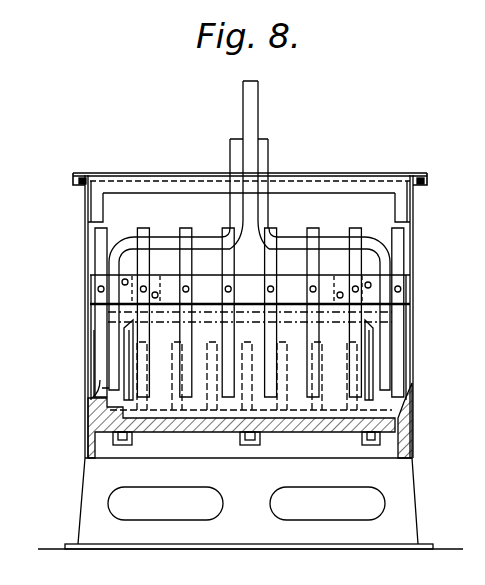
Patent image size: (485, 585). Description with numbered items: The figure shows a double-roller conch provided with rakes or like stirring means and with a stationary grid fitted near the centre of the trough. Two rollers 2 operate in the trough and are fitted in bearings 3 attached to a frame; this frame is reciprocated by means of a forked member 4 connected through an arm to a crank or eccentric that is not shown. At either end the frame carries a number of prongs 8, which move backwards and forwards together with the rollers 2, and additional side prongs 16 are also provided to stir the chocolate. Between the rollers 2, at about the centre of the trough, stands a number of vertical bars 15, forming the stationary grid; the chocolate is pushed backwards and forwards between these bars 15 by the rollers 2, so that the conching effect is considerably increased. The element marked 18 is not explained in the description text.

The rollers 2 is at (298, 388).
The bearings 3 is at (120, 366).
The forked member 4 is at (167, 244).
The prongs 8 is at (357, 229).
The vertical bars 15 is at (147, 400).
The side prongs 16 is at (393, 348).
The left guide 18 is at (97, 346).